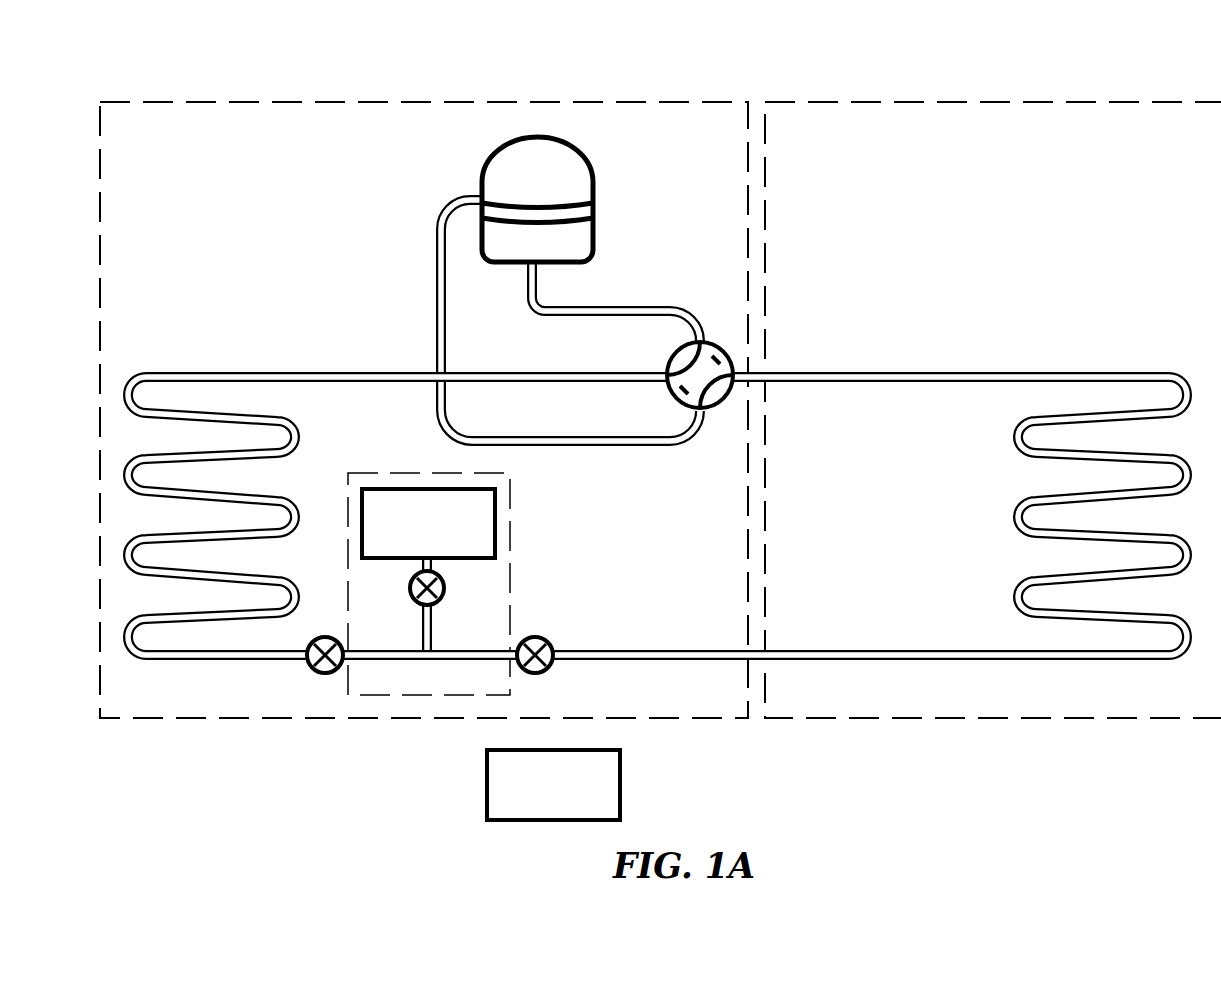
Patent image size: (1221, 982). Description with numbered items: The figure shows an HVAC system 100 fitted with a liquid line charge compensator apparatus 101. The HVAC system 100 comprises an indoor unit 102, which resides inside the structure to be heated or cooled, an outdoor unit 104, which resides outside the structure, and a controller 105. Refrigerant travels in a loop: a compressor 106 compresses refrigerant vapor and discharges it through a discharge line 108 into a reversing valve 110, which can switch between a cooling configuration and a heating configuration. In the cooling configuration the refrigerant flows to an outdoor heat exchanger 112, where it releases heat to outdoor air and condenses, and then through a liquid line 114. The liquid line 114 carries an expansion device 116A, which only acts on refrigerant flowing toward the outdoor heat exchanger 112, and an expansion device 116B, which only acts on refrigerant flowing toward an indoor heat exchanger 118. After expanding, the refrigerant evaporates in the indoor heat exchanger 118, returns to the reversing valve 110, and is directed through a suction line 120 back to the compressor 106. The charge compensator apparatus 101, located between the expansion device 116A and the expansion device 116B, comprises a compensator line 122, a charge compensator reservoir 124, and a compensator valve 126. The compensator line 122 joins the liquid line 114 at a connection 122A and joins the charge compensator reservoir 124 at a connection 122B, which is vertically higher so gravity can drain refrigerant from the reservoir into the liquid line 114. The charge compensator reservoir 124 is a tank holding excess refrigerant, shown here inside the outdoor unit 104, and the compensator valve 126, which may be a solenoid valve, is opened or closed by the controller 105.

The HVAC system 100 is at (660, 421).
The liquid line charge compensator apparatus 101 is at (510, 500).
The indoor unit 102 is at (1040, 100).
The outdoor unit 104 is at (312, 101).
The controller 105 is at (539, 802).
The compressor 106 is at (498, 156).
The discharge line 108 is at (677, 312).
The reversing valve 110 is at (668, 358).
The outdoor heat exchanger 112 is at (296, 432).
The liquid line 114 is at (290, 659).
The expansion device 116A is at (325, 637).
The expansion device 116B is at (536, 637).
The indoor heat exchanger 118 is at (1018, 437).
The suction line 120 is at (462, 446).
The compensator line 122 is at (460, 620).
The connection 122A is at (430, 660).
The connection 122B is at (433, 568).
The charge compensator reservoir 124 is at (362, 537).
The compensator valve 126 is at (410, 589).